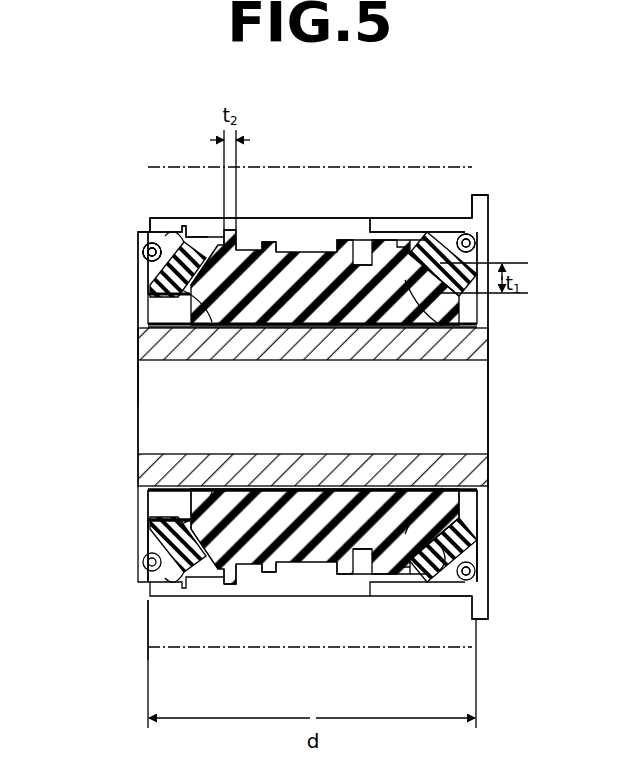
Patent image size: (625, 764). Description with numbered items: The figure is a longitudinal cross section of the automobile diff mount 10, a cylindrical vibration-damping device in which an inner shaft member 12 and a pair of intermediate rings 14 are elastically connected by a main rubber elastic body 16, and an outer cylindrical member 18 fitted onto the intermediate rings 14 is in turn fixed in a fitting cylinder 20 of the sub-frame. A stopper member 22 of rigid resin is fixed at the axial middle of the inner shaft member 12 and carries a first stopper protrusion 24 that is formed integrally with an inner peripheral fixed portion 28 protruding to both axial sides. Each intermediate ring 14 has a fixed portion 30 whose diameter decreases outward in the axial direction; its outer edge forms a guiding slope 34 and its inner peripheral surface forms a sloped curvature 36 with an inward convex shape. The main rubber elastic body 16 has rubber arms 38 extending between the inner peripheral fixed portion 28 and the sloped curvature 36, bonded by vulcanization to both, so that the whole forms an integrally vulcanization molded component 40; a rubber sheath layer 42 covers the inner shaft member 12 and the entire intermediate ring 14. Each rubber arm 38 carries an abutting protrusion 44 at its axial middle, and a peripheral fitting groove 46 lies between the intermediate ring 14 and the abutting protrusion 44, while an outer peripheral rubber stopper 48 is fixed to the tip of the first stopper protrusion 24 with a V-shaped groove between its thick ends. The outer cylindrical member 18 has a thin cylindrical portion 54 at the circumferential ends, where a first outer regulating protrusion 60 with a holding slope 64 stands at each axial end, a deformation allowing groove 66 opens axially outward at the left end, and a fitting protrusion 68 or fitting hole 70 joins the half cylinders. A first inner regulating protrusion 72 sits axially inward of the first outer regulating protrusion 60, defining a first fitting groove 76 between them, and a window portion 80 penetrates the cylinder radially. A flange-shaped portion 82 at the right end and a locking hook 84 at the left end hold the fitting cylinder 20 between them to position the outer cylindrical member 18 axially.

The diff mount 10 is at (86, 152).
The inner shaft member 12 is at (136, 402).
The intermediate ring 14 is at (150, 218).
The main rubber elastic body 16 is at (278, 243).
The outer cylindrical member 18 is at (492, 612).
The fitting cylinder 20 is at (146, 670).
The stopper member 22 is at (185, 590).
The first stopper protrusion 24 is at (320, 250).
The inner peripheral fixed portion 28 is at (210, 345).
The fixed portion 30 is at (160, 290).
The guiding slope 34 is at (150, 262).
The sloped curvature 36 is at (185, 298).
The rubber arm 38 is at (205, 322).
The integrally vulcanization molded component 40 is at (280, 600).
The rubber sheath layer 42 is at (430, 332).
The abutting protrusion 44 is at (262, 248).
The peripheral fitting groove 46 is at (398, 240).
The outer peripheral rubber stopper 48 is at (335, 250).
The thin cylindrical portion 54 is at (420, 238).
The first outer regulating protrusion 60 is at (158, 276).
The holding slope 64 is at (184, 242).
The deformation allowing groove 66 is at (149, 246).
The fitting protrusion 68 is at (150, 252).
The fitting hole 70 is at (472, 240).
The first inner regulating protrusion 72 is at (213, 243).
The first fitting groove 76 is at (205, 240).
The window portion 80 is at (357, 240).
The flange-shaped portion 82 is at (480, 210).
The locking hook 84 is at (146, 221).